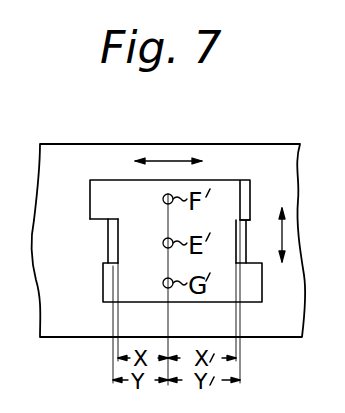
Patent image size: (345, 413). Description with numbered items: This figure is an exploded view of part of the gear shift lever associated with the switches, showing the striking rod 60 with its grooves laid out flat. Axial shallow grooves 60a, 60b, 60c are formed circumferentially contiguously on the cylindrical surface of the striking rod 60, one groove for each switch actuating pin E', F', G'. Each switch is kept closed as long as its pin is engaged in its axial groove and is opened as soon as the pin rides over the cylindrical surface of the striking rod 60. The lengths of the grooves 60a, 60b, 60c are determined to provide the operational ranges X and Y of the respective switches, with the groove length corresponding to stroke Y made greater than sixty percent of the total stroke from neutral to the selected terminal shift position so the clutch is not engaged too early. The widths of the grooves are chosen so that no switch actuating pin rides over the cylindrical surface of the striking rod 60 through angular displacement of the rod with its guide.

The striking rod 60 is at (246, 144).
The axial shallow groove 60a is at (128, 243).
The axial shallow groove 60b is at (100, 199).
The axial shallow groove 60c is at (128, 283).